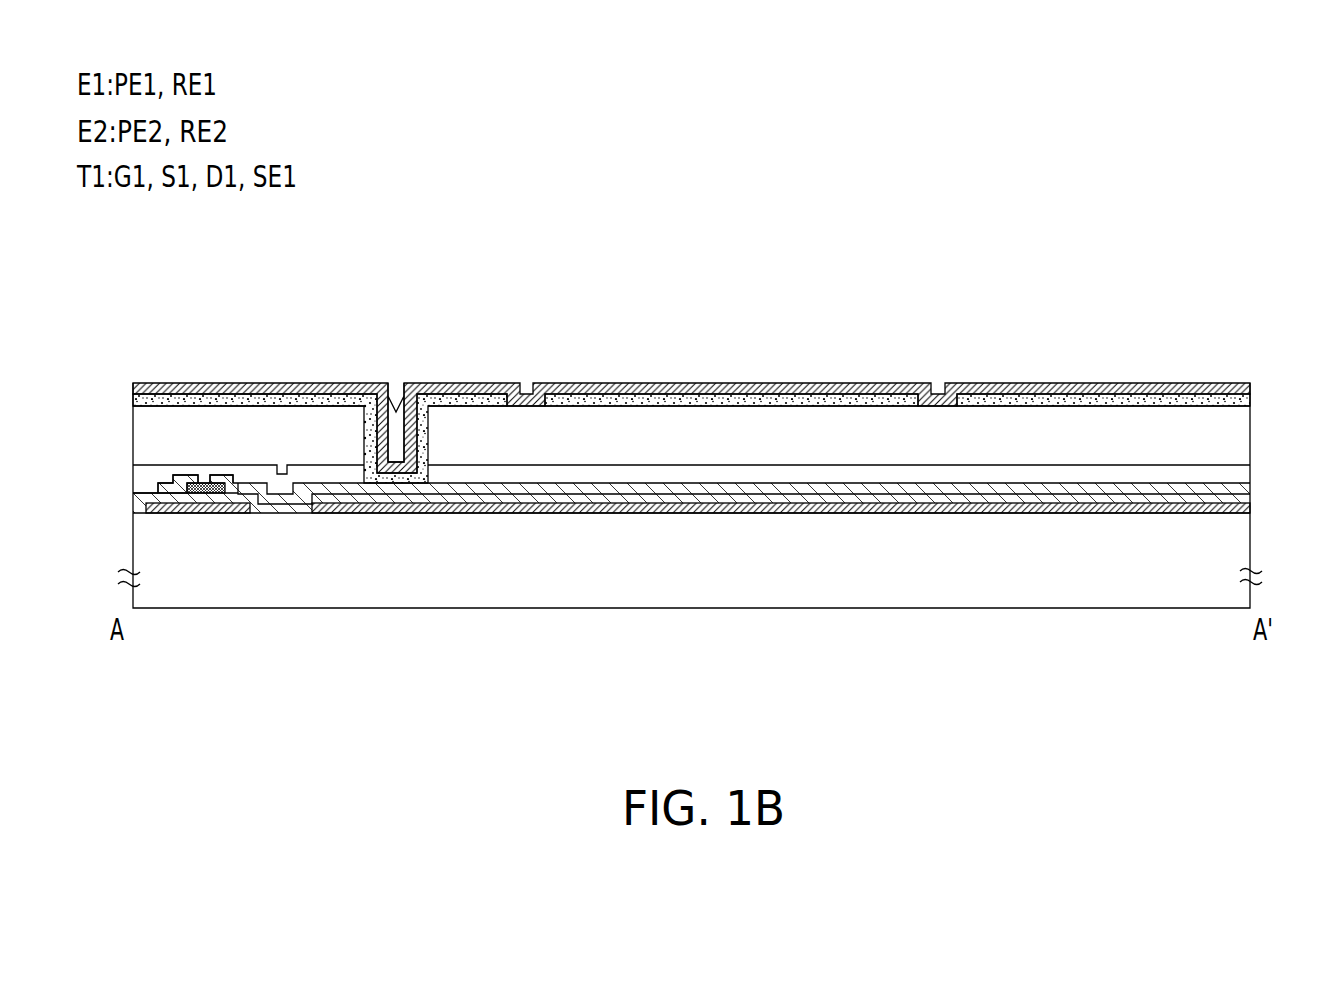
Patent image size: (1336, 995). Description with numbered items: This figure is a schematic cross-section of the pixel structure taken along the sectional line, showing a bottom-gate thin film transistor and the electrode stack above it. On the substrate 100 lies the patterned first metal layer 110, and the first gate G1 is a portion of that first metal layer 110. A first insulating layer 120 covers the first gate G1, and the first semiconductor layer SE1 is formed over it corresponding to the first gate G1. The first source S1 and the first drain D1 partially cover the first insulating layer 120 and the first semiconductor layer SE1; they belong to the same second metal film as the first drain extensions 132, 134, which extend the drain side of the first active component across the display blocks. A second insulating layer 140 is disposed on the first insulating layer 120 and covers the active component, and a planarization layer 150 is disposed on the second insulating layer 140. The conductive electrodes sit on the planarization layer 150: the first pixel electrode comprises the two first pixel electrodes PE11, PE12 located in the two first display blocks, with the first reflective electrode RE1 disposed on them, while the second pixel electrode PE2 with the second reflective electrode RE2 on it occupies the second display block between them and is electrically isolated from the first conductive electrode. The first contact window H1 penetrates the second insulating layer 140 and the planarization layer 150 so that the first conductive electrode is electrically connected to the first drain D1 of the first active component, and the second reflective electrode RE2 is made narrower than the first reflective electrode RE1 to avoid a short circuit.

The substrate 100 is at (1233, 558).
The first metal layer 110 is at (404, 507).
The first insulating layer 120 is at (283, 508).
The first drain extension 132 is at (645, 488).
The first drain extension 134 is at (1157, 488).
The second insulating layer 140 is at (745, 470).
The planarization layer 150 is at (828, 440).
The first gate G1 is at (215, 508).
The first source S1 is at (168, 488).
The first drain D1 is at (240, 490).
The first semiconductor layer SE1 is at (202, 488).
The first pixel electrode PE11 is at (218, 393).
The first pixel electrode PE12 is at (1008, 392).
The second pixel electrode PE2 is at (682, 392).
The first reflective electrode RE1 is at (298, 393).
The second reflective electrode RE2 is at (731, 400).
The first contact window H1 is at (396, 396).